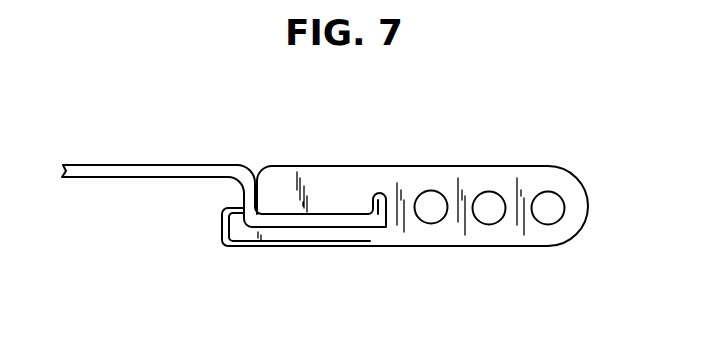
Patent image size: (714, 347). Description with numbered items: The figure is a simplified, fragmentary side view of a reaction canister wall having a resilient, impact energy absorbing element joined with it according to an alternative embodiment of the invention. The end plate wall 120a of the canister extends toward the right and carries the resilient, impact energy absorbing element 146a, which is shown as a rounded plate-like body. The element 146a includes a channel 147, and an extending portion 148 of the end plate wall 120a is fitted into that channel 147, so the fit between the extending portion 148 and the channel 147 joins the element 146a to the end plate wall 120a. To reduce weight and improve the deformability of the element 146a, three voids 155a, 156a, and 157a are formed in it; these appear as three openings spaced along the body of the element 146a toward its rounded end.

The end plate wall 120a is at (147, 165).
The resilient, impact energy absorbing element 146a is at (585, 199).
The channel 147 is at (391, 225).
The extending portion 148 is at (289, 215).
The void 155a is at (425, 198).
The void 156a is at (483, 198).
The void 157a is at (543, 198).